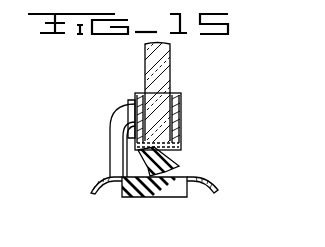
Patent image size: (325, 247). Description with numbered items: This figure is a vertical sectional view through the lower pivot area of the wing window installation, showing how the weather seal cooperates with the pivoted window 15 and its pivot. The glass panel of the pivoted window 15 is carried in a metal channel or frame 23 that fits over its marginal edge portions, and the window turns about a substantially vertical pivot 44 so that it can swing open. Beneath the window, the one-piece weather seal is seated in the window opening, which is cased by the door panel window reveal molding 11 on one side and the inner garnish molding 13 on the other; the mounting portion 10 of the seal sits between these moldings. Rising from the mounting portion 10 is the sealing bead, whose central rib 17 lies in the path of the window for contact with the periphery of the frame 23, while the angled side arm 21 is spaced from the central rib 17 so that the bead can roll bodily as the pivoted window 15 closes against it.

The mounting portion 10 is at (153, 198).
The door panel window reveal molding 11 is at (102, 182).
The inner garnish molding 13 is at (217, 182).
The pivoted window 15 is at (167, 79).
The central rib 17 is at (179, 148).
The side arm 21 is at (174, 170).
The metal channel or frame 23 is at (178, 130).
The vertical pivot 44 is at (113, 142).